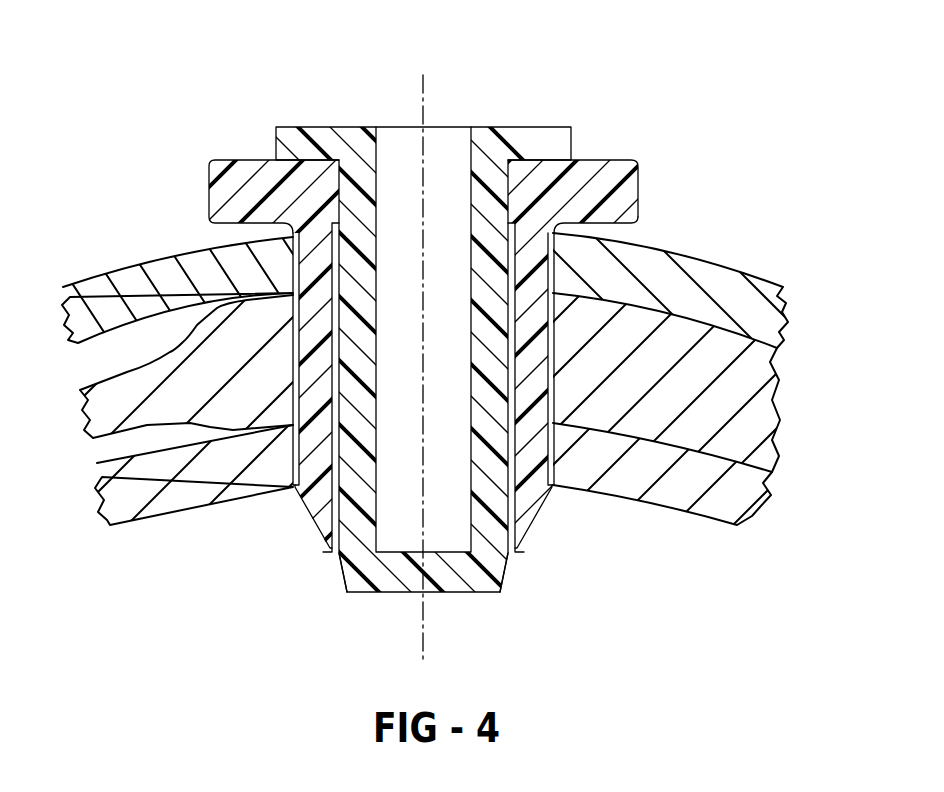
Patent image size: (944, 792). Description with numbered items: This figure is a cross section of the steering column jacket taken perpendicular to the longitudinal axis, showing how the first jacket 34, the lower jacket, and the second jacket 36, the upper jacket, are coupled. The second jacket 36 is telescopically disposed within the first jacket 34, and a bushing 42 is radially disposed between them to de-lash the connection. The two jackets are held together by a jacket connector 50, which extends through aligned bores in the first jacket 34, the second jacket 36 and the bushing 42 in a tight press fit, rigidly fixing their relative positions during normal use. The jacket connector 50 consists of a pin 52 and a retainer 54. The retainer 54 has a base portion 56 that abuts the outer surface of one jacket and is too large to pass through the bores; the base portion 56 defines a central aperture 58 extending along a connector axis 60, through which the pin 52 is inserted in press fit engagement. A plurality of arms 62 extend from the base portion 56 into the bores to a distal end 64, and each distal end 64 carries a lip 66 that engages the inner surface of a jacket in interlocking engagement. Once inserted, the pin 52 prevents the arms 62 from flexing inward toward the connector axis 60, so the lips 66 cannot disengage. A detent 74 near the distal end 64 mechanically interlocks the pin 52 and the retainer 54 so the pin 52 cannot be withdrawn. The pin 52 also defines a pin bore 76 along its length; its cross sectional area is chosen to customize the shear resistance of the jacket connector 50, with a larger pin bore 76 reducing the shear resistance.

The first jacket 34 is at (735, 492).
The second jacket 36 is at (768, 315).
The bushing 42 is at (755, 413).
The jacket connector 50 is at (472, 335).
The pin 52 is at (525, 127).
The retainer 54 is at (630, 182).
The base portion 56 is at (638, 206).
The central aperture 58 is at (500, 190).
The connector axis 60 is at (424, 620).
The arms 62 is at (315, 370).
The distal end 64 is at (323, 554).
The lip 66 is at (293, 486).
The detent 74 is at (324, 556).
The pin bore 76 is at (472, 147).